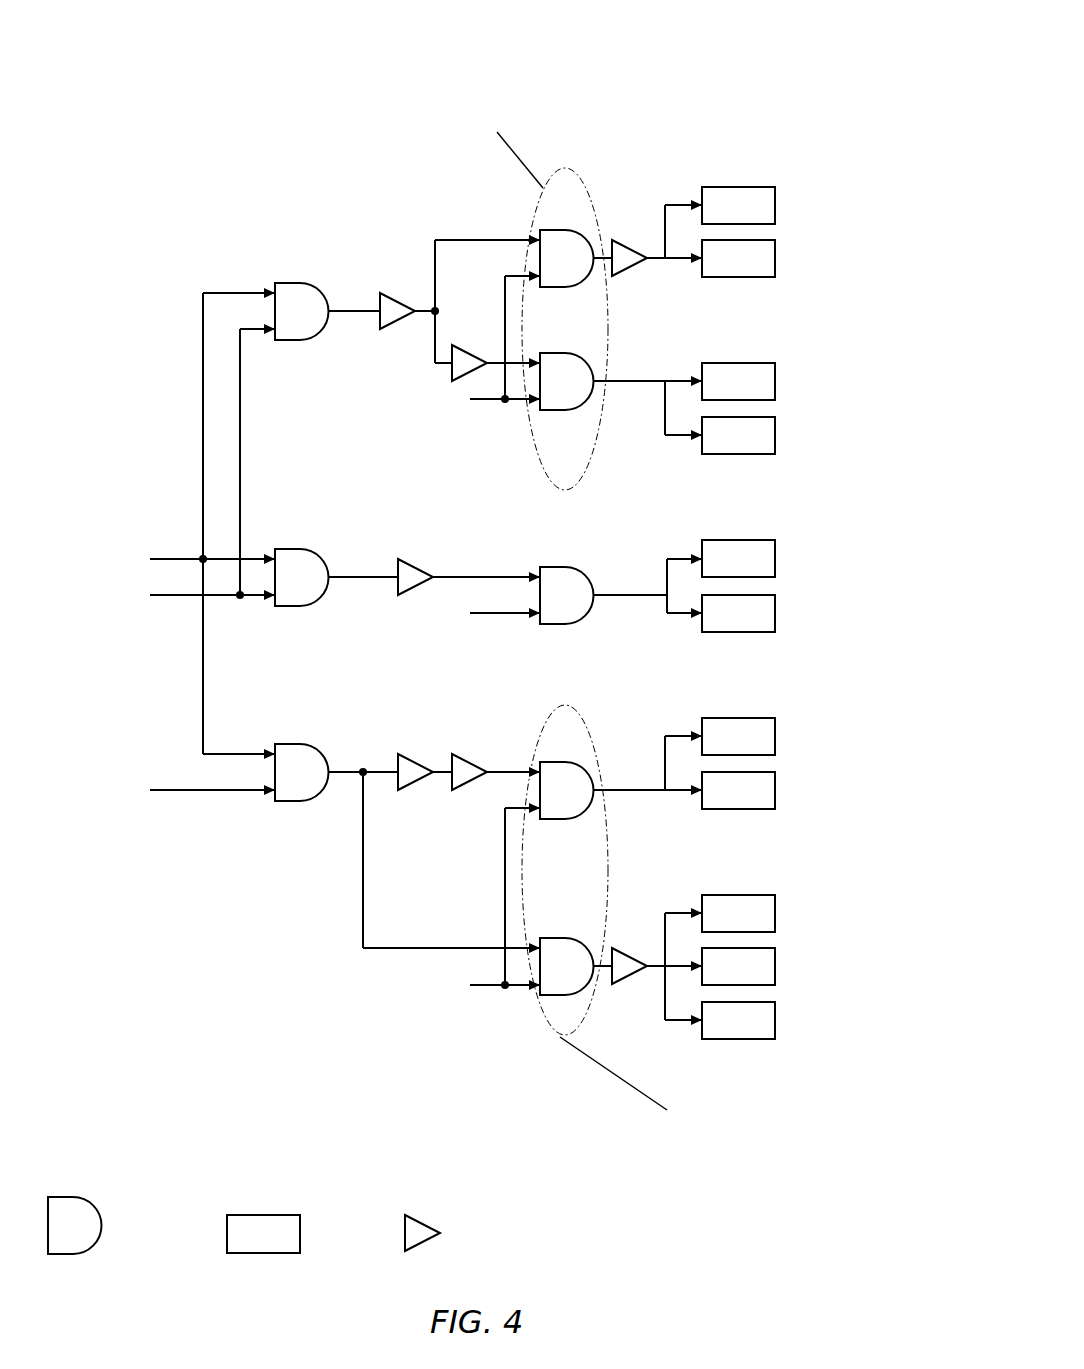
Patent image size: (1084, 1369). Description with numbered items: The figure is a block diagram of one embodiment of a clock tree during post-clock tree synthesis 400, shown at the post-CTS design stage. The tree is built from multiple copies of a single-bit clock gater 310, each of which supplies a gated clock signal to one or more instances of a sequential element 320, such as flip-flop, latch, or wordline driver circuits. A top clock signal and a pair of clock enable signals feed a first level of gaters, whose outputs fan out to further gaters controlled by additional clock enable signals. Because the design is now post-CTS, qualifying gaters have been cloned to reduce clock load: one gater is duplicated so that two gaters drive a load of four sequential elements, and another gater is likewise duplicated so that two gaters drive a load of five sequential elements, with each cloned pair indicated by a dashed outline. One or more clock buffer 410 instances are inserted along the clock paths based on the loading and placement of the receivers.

The clock tree during post-clock tree synthesis 400 is at (826, 85).
The single-bit clock gater 310 is at (78, 1193).
The sequential element 320 is at (263, 1213).
The clock buffer 410 is at (440, 1233).